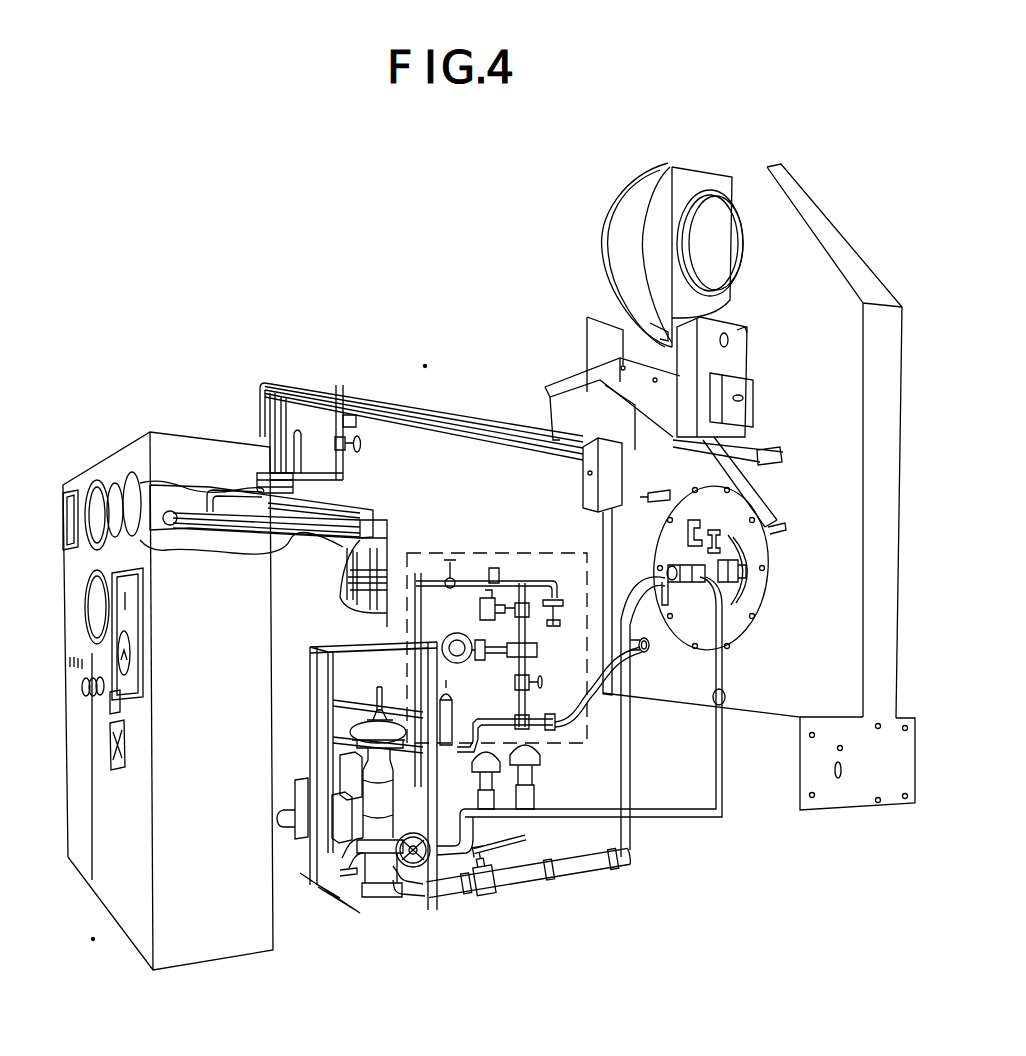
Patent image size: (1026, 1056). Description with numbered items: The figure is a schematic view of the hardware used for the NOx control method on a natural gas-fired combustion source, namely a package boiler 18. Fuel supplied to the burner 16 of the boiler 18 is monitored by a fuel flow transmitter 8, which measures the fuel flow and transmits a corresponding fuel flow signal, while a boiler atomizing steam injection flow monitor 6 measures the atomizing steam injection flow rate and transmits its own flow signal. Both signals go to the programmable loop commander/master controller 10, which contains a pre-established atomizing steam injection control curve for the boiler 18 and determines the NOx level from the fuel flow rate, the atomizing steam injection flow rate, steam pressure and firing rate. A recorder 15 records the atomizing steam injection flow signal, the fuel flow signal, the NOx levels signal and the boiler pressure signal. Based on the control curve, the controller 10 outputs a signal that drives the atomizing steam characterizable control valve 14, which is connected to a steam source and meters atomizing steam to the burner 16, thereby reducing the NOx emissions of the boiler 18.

The boiler atomizing steam injection flow monitor 6 is at (451, 622).
The fuel flow transmitter 8 is at (407, 868).
The programmable loop commander/master controller (PLC) 10 is at (112, 750).
The atomizing steam characterizable control valve 14 is at (491, 597).
The recorder 15 is at (147, 614).
The burner 16 is at (722, 622).
The package boiler 18 is at (815, 289).